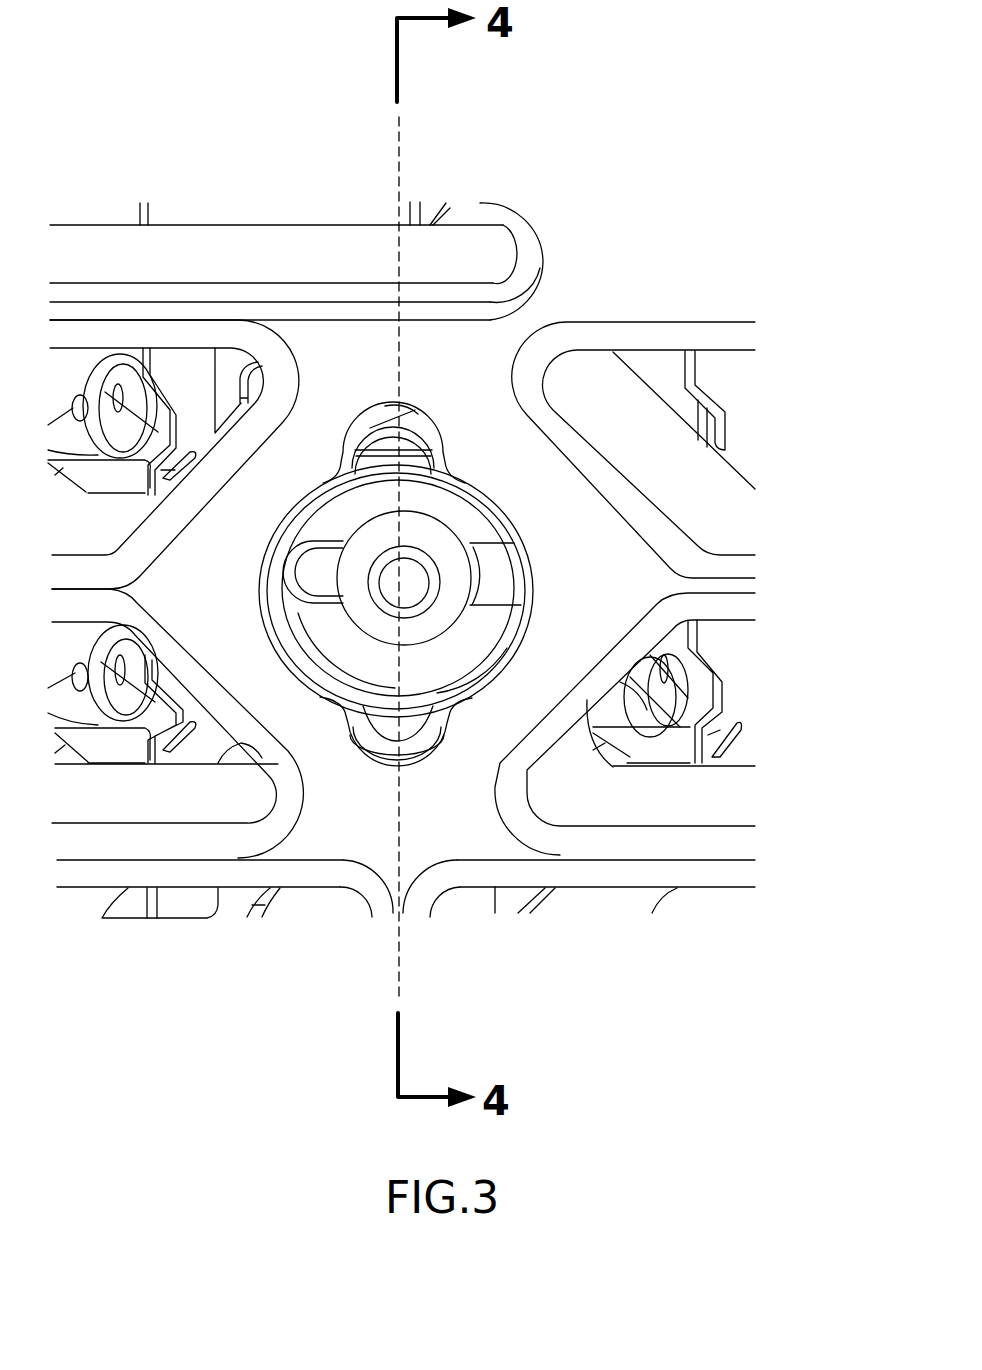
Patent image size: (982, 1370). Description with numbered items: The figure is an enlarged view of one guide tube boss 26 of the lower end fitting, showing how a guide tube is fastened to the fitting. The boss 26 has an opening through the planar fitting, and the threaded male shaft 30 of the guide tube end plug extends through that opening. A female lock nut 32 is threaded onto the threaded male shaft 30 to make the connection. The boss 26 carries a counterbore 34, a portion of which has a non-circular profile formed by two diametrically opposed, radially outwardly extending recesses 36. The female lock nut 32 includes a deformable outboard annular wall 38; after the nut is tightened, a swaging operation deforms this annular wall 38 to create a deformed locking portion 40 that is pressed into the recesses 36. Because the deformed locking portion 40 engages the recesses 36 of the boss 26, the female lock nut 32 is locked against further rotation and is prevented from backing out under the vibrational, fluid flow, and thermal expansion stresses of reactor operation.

The guide tube boss 26 is at (215, 645).
The threaded male shaft 30 is at (410, 635).
The female lock nut 32 is at (353, 658).
The counterbore 34 is at (330, 465).
The recesses 36 is at (380, 403).
The outboard annular wall 38 is at (490, 490).
The deformed locking portion 40 is at (430, 423).